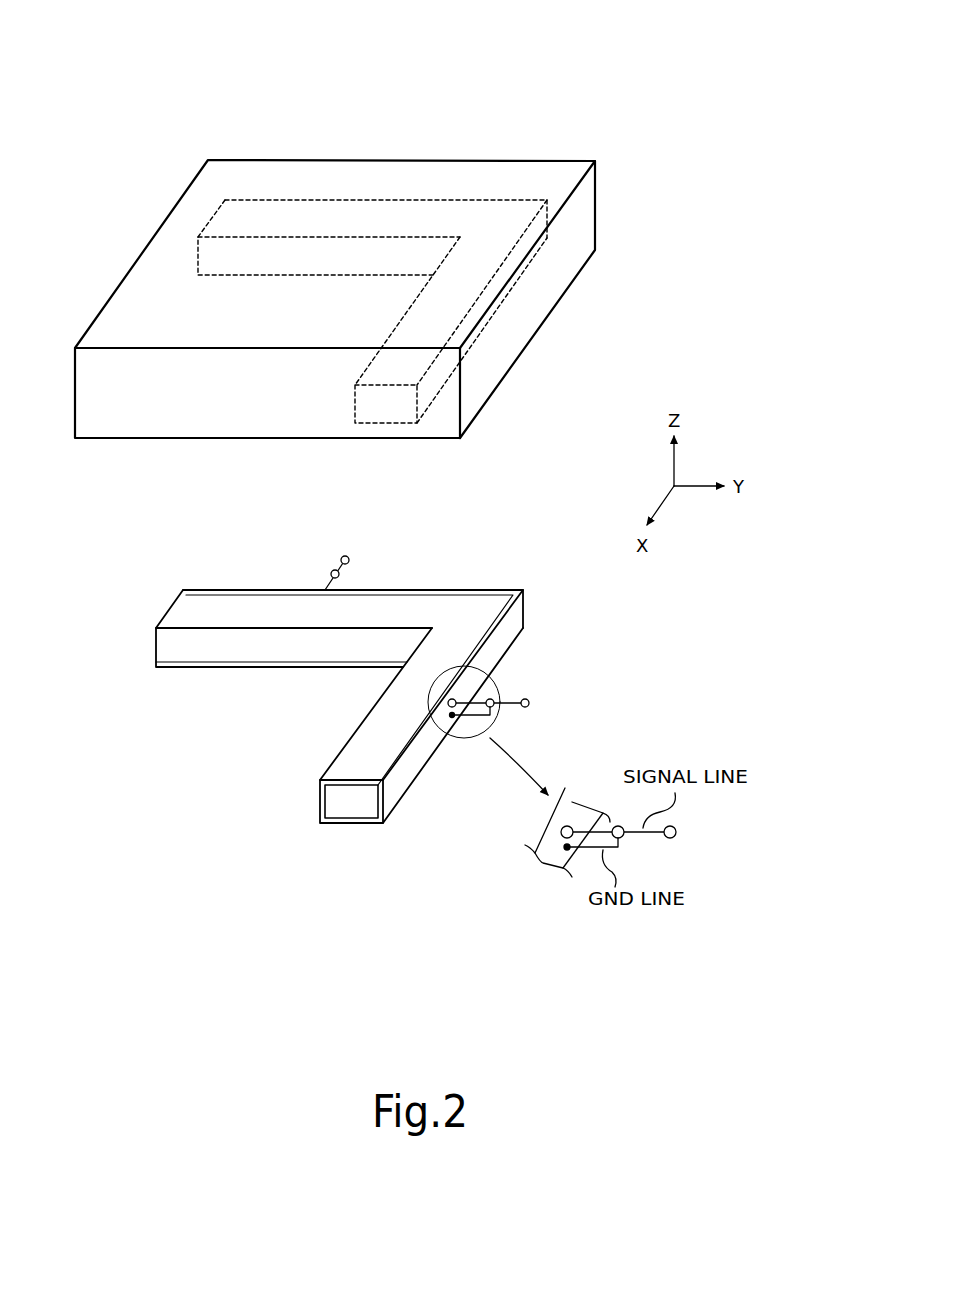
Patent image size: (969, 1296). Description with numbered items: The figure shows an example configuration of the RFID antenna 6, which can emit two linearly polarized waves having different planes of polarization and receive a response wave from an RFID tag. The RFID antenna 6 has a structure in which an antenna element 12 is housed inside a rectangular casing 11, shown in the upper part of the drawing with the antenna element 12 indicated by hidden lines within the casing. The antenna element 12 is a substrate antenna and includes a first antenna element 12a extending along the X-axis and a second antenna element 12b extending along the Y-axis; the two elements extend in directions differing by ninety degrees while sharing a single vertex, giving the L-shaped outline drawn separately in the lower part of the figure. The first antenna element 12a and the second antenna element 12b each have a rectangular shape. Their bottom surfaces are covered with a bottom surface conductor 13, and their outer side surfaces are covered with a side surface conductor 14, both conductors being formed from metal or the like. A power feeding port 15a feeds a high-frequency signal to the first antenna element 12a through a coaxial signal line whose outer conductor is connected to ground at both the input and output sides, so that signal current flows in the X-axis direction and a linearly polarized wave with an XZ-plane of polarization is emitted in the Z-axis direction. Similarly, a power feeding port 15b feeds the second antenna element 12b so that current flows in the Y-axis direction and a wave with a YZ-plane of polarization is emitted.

The RFID antenna 6 is at (555, 63).
The rectangular casing 11 is at (412, 158).
The antenna element 12 is at (660, 155).
The first antenna element 12a is at (533, 252).
The second antenna element 12b is at (383, 217).
The bottom surface conductor 13 is at (348, 825).
The side surface conductor 14 is at (407, 763).
The power feeding port 15a is at (499, 702).
The power feeding port 15b is at (343, 559).